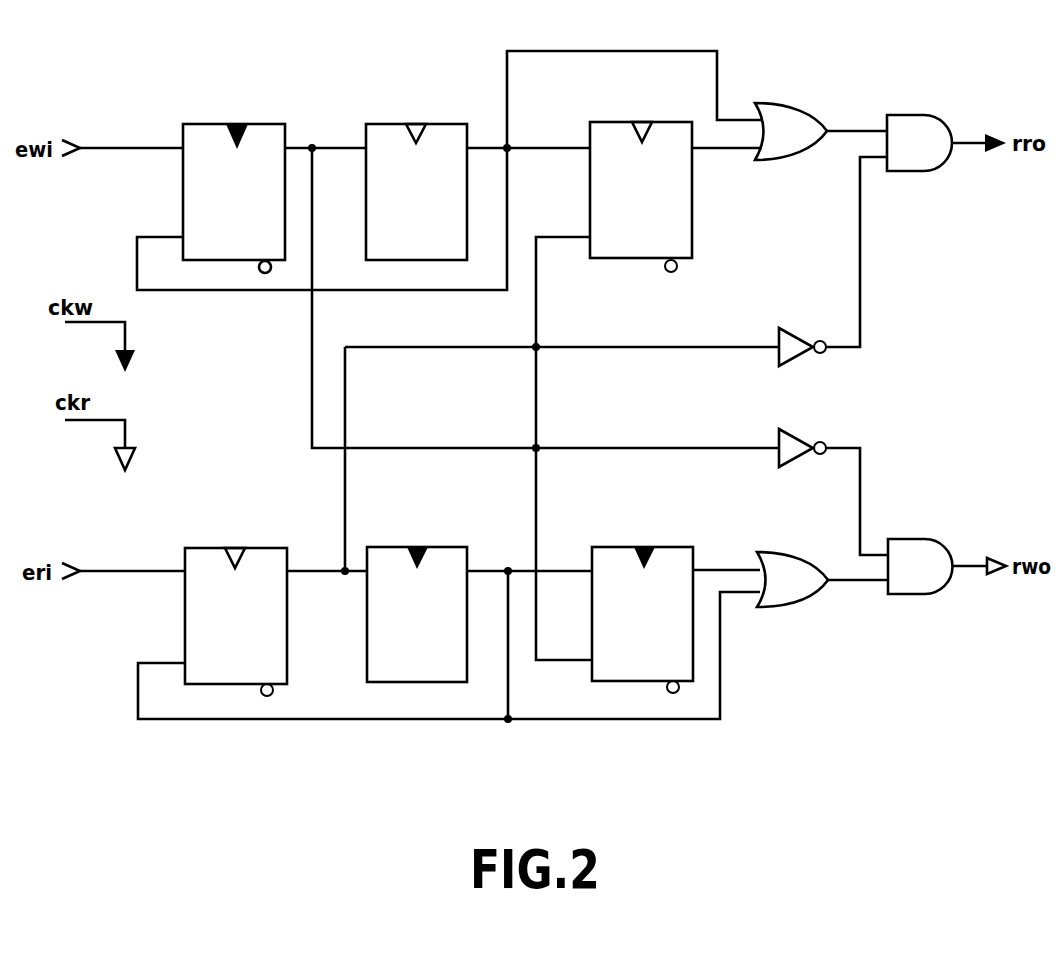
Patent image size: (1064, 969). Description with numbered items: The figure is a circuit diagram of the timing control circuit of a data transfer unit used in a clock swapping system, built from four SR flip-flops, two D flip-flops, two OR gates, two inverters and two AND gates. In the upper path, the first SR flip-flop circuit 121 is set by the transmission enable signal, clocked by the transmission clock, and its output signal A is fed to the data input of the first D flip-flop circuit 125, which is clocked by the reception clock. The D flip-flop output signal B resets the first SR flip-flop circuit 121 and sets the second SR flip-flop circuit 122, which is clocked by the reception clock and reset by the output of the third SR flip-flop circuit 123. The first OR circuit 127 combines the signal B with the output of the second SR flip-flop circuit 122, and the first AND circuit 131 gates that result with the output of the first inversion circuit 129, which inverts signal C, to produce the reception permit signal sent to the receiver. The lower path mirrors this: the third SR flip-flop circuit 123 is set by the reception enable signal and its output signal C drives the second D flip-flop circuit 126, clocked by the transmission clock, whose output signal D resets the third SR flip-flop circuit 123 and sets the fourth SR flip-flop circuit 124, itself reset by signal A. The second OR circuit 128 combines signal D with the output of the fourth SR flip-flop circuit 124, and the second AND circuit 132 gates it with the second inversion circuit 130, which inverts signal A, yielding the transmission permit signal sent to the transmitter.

The first SR flip-flop circuit 121 is at (262, 124).
The second SR flip-flop circuit 122 is at (666, 122).
The third SR flip-flop circuit 123 is at (263, 548).
The fourth SR flip-flop circuit 124 is at (668, 547).
The first D flip-flop circuit 125 is at (442, 124).
The second D flip-flop circuit 126 is at (443, 547).
The first OR circuit 127 is at (788, 103).
The second OR circuit 128 is at (790, 552).
The first inversion circuit 129 is at (783, 328).
The second inversion circuit 130 is at (783, 429).
The first AND circuit 131 is at (907, 115).
The second AND circuit 132 is at (907, 539).
The output signal of the first SR-FF circuit A is at (312, 144).
The output signal of the first D-FF circuit B is at (509, 146).
The output signal of the third SR-FF circuit C is at (344, 569).
The output signal of the second D-FF circuit D is at (508, 568).